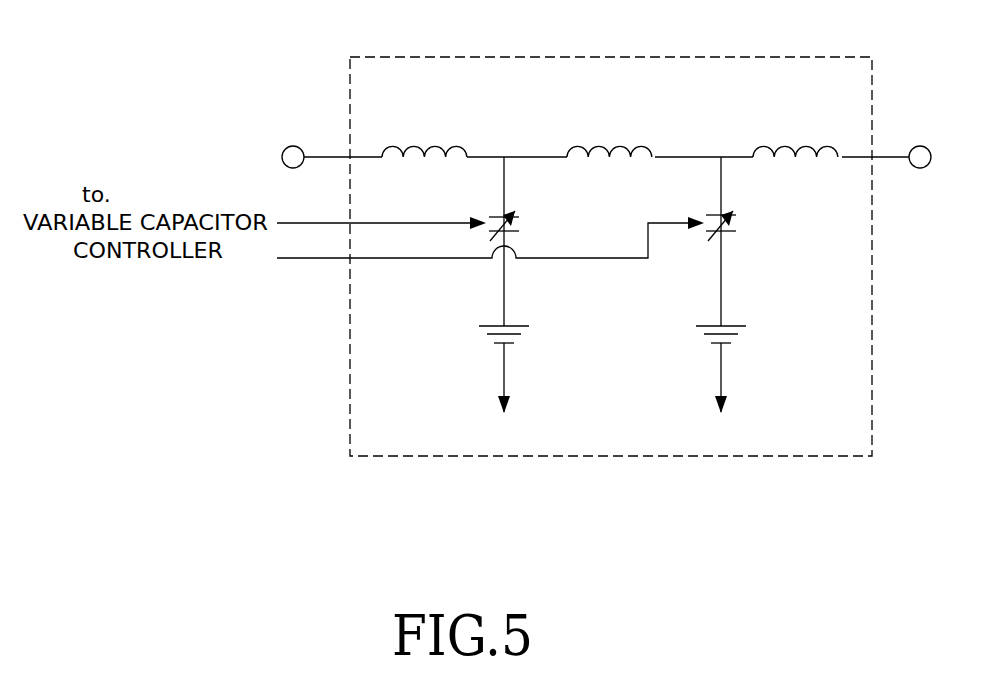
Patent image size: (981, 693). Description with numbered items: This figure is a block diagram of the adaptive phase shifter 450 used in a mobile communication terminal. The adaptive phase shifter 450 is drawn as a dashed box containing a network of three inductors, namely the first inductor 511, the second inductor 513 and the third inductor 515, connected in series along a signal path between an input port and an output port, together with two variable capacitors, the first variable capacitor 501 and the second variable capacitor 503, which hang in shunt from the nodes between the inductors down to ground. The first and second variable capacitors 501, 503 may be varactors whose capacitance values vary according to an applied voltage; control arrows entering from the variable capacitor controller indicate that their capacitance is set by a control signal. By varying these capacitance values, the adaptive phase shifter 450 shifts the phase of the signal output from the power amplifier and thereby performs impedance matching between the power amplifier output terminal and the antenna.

The adaptive phase shifter 450 is at (611, 256).
The inductor L1 511 is at (428, 134).
The inductor L2 513 is at (613, 134).
The inductor L3 515 is at (799, 134).
The variable capacitor C1 501 is at (549, 241).
The variable capacitor C2 503 is at (767, 241).